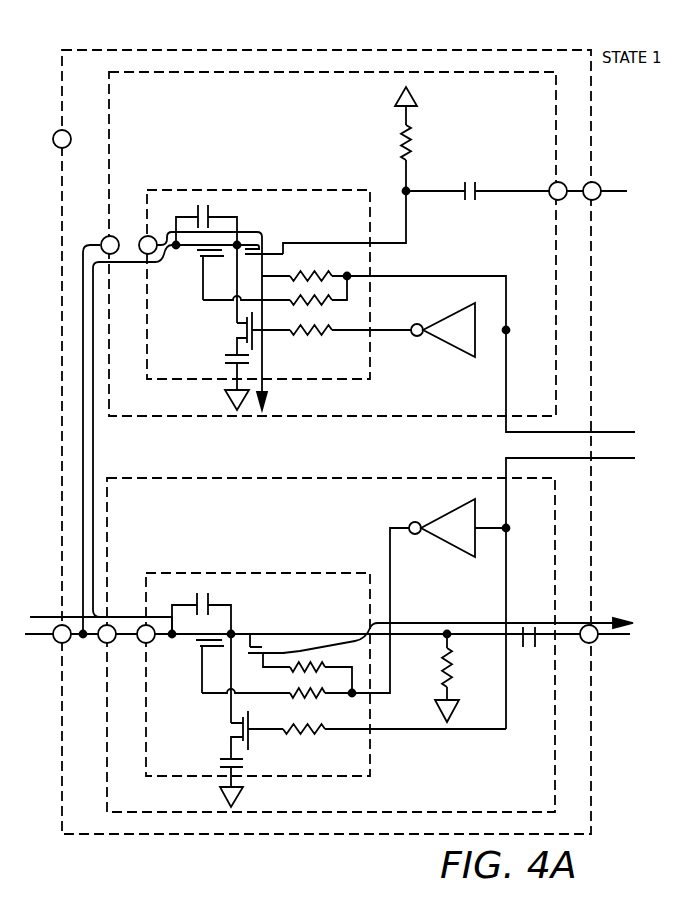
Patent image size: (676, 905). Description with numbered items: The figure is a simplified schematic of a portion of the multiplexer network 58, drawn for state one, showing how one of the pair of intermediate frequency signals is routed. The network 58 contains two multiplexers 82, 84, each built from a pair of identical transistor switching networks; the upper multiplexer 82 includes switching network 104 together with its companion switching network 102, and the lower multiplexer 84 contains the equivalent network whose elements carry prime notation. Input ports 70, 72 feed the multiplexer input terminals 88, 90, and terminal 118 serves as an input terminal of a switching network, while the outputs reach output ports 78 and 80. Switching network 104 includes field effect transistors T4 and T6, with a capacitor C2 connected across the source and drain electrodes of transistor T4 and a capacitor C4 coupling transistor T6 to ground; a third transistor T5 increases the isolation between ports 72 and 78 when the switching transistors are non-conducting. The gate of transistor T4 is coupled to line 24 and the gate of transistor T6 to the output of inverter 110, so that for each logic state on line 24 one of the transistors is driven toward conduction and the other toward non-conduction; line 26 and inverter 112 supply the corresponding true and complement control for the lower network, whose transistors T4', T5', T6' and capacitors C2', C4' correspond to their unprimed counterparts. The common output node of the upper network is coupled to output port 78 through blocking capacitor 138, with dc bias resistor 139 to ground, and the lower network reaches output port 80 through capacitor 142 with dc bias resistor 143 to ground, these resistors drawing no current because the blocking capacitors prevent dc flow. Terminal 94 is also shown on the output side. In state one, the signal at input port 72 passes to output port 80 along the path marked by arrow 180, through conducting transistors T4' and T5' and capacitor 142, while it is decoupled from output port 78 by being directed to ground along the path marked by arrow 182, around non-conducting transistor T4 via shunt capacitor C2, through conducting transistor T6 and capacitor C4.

The multiplexer network 58 is at (137, 50).
The multiplexer 82 is at (108, 122).
The multiplexer 84 is at (187, 477).
The switching network 104 is at (372, 353).
The input port 70 is at (54, 137).
The input port 72 is at (56, 639).
The output port 78 is at (599, 183).
The output port 80 is at (593, 643).
The input terminal 88 is at (104, 237).
The input terminal 90 is at (102, 641).
The node 94 is at (551, 183).
The switching network 102 is at (143, 641).
The input terminal 118 is at (142, 237).
The dc bias resistor 139 is at (399, 153).
The dc bias resistor 143 is at (443, 679).
The capacitor 138 is at (473, 181).
The capacitor 142 is at (532, 627).
The inverter 110 is at (445, 352).
The inverter 112 is at (440, 517).
The line 24 is at (605, 432).
The line 26 is at (598, 459).
The arrow 180 is at (128, 615).
The arrow 182 is at (95, 443).
The capacitor C2 is at (213, 219).
The capacitor C4 is at (217, 379).
The field effect transistor T4 is at (226, 274).
The field effect transistor T5 is at (325, 222).
The field effect transistor T6 is at (240, 332).
The capacitor C2' is at (210, 607).
The capacitor C4' is at (208, 779).
The field effect transistor T4' is at (228, 666).
The field effect transistor T5' is at (274, 637).
The field effect transistor T6' is at (233, 735).